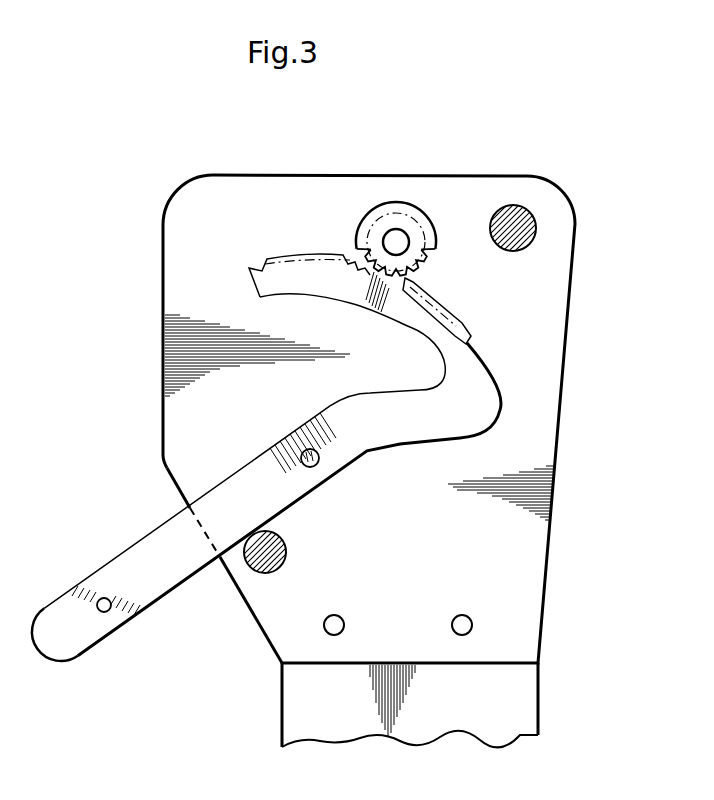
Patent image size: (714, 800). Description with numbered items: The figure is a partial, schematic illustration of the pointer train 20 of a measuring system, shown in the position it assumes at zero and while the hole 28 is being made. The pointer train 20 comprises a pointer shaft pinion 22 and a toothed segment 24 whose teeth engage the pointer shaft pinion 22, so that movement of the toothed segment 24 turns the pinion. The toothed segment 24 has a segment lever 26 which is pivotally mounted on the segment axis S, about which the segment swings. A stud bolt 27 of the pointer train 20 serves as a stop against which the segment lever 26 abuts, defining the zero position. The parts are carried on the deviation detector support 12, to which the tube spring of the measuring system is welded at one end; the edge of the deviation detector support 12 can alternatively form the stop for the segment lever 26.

The deviation detector support 12 is at (527, 707).
The pointer train 20 is at (567, 402).
The pointer shaft pinion 22 is at (418, 248).
The toothed segment 24 is at (436, 319).
The segment lever 26 is at (193, 584).
The stud bolt 27 is at (283, 547).
The hole 28 is at (105, 612).
The segment axis S is at (318, 462).